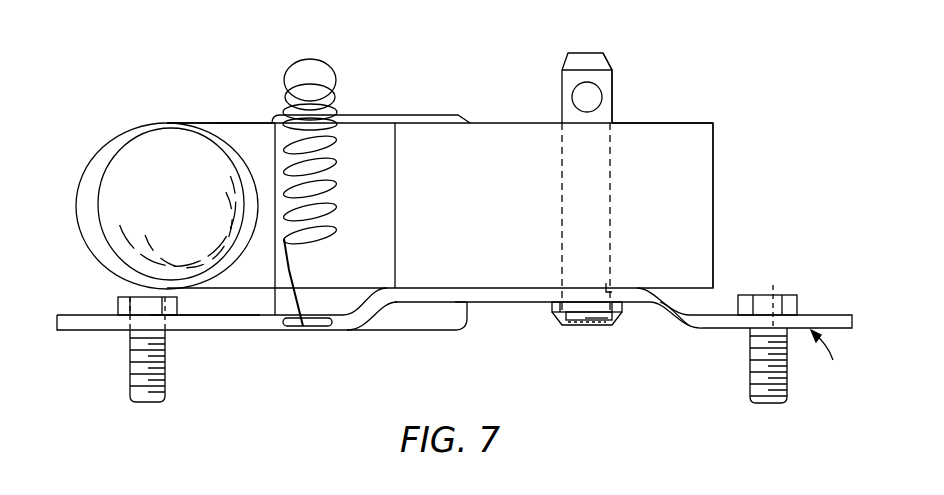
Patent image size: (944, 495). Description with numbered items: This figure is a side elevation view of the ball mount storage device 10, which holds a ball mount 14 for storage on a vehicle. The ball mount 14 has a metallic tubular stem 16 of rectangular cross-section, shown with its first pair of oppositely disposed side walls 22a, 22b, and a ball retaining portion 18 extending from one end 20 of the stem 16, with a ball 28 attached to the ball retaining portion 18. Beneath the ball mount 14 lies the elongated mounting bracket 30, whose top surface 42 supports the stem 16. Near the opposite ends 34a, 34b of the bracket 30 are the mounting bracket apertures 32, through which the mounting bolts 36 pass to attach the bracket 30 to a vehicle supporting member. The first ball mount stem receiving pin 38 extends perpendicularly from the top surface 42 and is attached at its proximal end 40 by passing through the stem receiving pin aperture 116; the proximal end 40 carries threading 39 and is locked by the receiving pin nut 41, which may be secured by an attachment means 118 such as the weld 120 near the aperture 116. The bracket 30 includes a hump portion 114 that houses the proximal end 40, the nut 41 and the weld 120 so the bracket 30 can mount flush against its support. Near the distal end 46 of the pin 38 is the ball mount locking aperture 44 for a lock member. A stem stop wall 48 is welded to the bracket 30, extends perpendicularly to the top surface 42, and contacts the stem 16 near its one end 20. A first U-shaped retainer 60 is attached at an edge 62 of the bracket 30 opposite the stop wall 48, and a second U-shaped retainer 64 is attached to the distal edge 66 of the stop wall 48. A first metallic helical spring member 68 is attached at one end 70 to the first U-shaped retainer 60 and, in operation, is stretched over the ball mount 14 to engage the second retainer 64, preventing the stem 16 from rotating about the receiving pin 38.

The ball mount storage device 10 is at (851, 376).
The ball mount 14 is at (716, 138).
The tubular stem 16 is at (716, 195).
The ball retaining portion 18 is at (206, 123).
The one end of the tubular stem 20 is at (232, 122).
The stem side wall 22a is at (636, 122).
The stem side wall 22b is at (672, 300).
The ball 28 is at (121, 150).
The mounting bracket 30 is at (372, 303).
The mounting bracket aperture 32 is at (135, 332).
The end of the mounting bracket 34a is at (82, 322).
The end of the mounting bracket 34b is at (826, 318).
The mounting bolt 36 is at (122, 302).
The first ball mount stem receiving pin 38 is at (585, 53).
The threading 39 is at (578, 326).
The proximal end 40 is at (560, 284).
The receiving pin nut 41 is at (617, 312).
The top surface 42 is at (508, 288).
The ball mount locking aperture 44 is at (572, 93).
The distal end 46 is at (613, 73).
The stem stop wall 48 is at (424, 114).
The first U-shaped retainer 60 is at (292, 327).
The edge of the mounting bracket 62 is at (203, 322).
The second U-shaped retainer 64 is at (305, 82).
The distal edge of stem stop wall 66 is at (364, 114).
The first helical spring member 68 is at (337, 193).
The one end of spring 70 is at (300, 300).
The hump portion 114 is at (488, 303).
The stem receiving pin aperture 116 is at (612, 284).
The attachment means 118 is at (592, 327).
The weld 120 is at (553, 315).